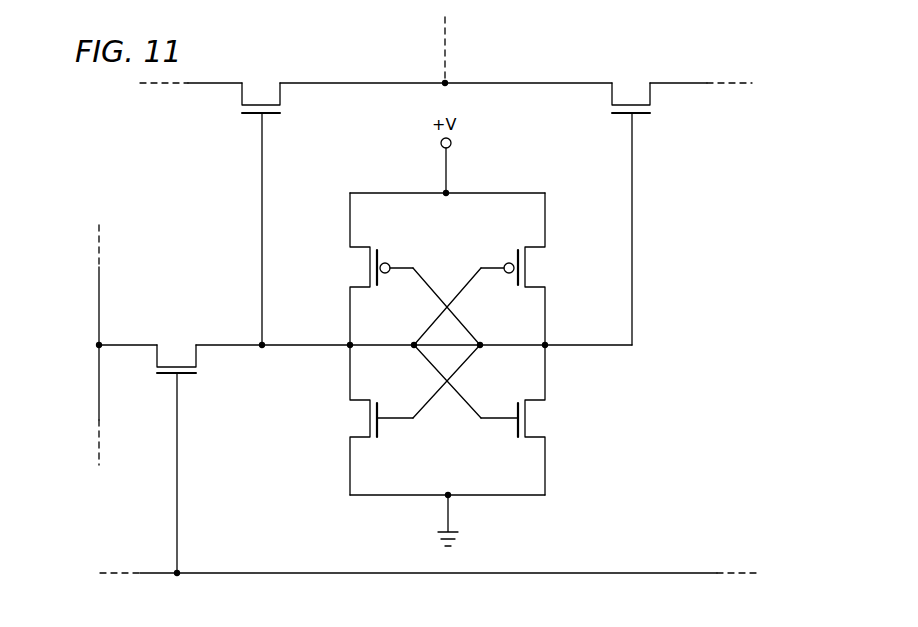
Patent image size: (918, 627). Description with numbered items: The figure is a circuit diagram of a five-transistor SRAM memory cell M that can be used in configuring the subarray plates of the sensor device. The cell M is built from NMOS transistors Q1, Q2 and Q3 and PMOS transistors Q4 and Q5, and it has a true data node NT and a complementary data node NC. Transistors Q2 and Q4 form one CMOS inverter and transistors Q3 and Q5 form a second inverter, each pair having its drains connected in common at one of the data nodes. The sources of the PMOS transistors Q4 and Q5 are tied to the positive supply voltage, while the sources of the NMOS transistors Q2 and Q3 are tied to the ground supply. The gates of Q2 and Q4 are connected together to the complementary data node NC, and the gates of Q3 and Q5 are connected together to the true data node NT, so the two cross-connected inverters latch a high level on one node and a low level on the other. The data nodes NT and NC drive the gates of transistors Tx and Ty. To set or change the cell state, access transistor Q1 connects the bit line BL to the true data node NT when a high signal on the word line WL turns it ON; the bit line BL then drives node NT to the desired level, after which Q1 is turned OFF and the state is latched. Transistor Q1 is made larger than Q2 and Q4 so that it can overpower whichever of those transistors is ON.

The transistor Tx is at (261, 202).
The transistor Ty is at (631, 201).
The NMOS transistor Q1 is at (176, 448).
The NMOS transistor Q2 is at (368, 420).
The NMOS transistor Q3 is at (525, 420).
The PMOS transistor Q4 is at (368, 269).
The PMOS transistor Q5 is at (525, 269).
The true data node NT is at (344, 349).
The complementary data node NC is at (549, 349).
The bit line BL is at (83, 345).
The word line WL is at (428, 557).
The memory cell M is at (604, 463).